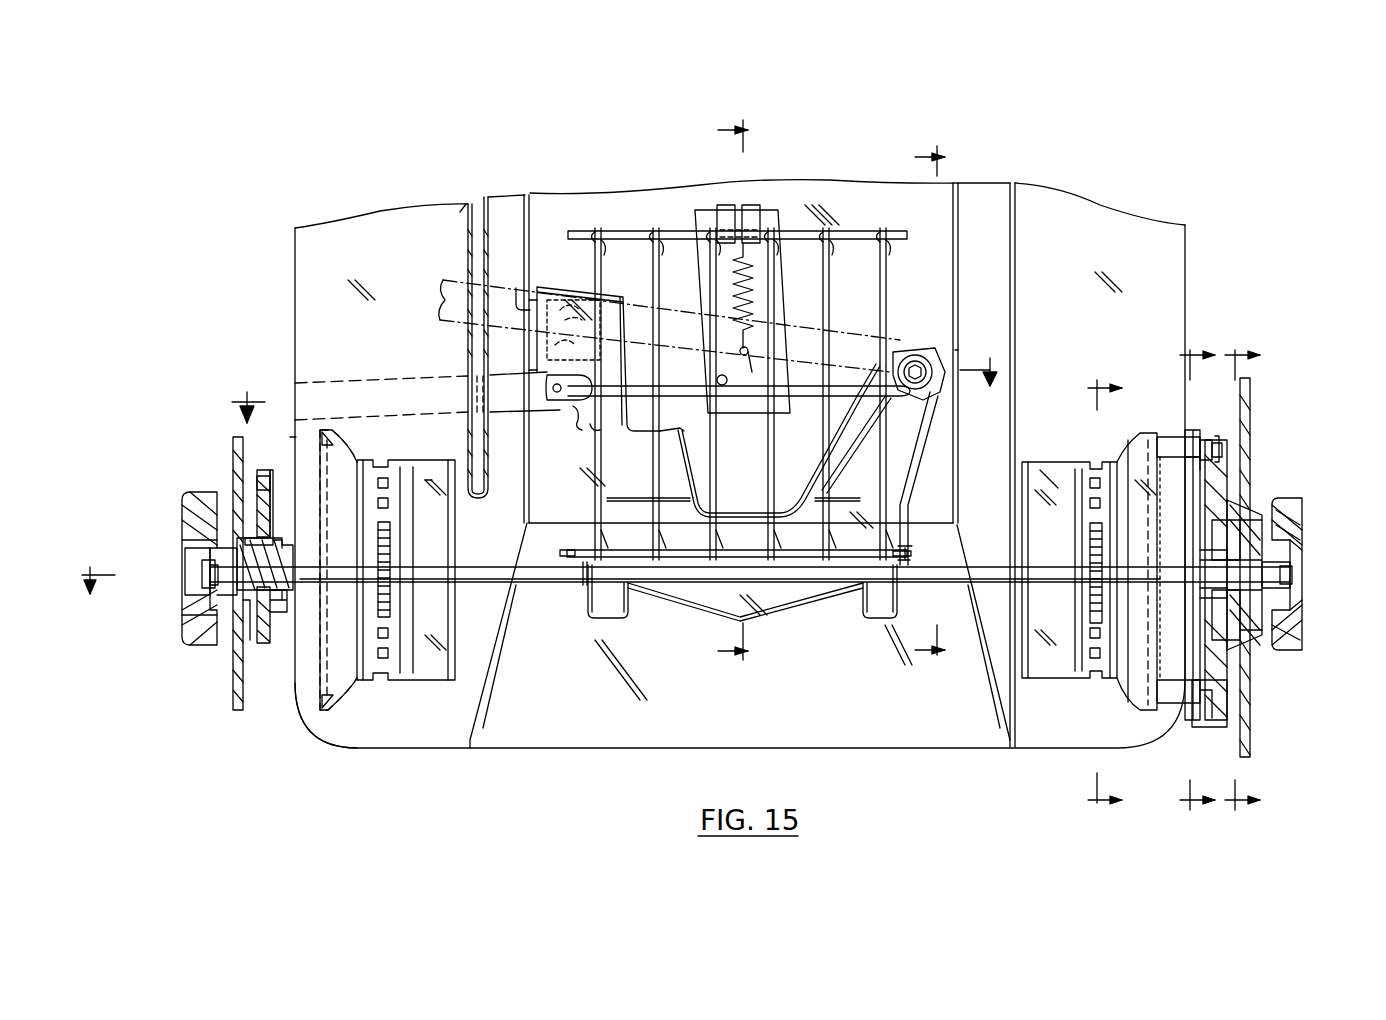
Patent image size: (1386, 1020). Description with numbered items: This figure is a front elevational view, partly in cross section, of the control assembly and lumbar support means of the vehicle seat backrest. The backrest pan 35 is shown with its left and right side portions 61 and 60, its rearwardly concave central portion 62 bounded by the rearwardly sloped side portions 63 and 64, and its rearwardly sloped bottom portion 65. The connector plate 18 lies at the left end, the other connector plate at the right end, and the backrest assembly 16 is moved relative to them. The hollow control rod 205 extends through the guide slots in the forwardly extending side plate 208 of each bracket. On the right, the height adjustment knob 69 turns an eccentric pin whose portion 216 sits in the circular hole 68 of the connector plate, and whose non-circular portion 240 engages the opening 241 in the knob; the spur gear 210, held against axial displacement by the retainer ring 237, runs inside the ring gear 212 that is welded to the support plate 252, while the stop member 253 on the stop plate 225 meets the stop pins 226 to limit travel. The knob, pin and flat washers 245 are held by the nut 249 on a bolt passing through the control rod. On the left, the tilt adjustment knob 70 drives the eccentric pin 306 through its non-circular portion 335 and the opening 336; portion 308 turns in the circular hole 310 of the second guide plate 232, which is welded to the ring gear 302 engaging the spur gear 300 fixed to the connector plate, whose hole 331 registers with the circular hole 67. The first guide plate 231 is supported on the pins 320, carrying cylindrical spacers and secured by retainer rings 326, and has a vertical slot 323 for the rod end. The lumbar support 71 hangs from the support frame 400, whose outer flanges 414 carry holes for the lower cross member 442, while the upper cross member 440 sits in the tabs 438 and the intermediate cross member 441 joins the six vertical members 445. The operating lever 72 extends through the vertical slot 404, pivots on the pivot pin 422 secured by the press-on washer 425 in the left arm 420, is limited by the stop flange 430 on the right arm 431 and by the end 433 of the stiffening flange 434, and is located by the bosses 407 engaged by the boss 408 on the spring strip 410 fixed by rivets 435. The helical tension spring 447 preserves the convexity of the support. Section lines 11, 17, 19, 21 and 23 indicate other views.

The section line 11 is at (97, 593).
The backrest assembly 16 is at (1105, 595).
The section line 17 is at (1199, 580).
The connector plate 18 is at (1252, 400).
The section line 19 is at (1244, 576).
The section line 21 is at (730, 397).
The section line 23 is at (609, 391).
The backrest pan 35 is at (1186, 240).
The right side portion 60 is at (1112, 252).
The left side portion 61 is at (382, 262).
The central portion 62 is at (890, 208).
The side portion 63 is at (1016, 232).
The side portion 64 is at (494, 213).
The bottom portion 65 is at (746, 710).
The circular hole 67 is at (1241, 525).
The circular hole 68 is at (232, 548).
The height adjustment knob 69 is at (183, 502).
The tilt adjustment knob 70 is at (1299, 505).
The lumbar support 71 is at (893, 318).
The operating lever 72 is at (293, 382).
The control rod 205 is at (979, 560).
The side plate 208 is at (322, 670).
The spur gear 210 is at (258, 645).
The ring gear 212 is at (258, 492).
The eccentric cylindrical portion 216 is at (244, 643).
The stop plate 225 is at (269, 470).
The stop pin 226 is at (256, 477).
The first guide plate 231 is at (1205, 726).
The second guide plate 232 is at (1228, 714).
The retainer ring 237 is at (300, 567).
The non-circular portion 240 is at (238, 598).
The opening 241 is at (183, 545).
The flat washer 245 is at (205, 585).
The nut 249 is at (1294, 566).
The support plate 252 is at (261, 655).
The stop member 253 is at (297, 432).
The spur gear 300 is at (1246, 632).
The ring gear 302 is at (1233, 500).
The eccentric pin 306 is at (1288, 598).
The eccentric cylindrical portion 308 is at (1224, 560).
The circular hole 310 is at (1220, 590).
The pin 320 is at (1190, 715).
The vertical slot 323 is at (1198, 467).
The retainer ring 326 is at (1214, 447).
The hole 331 is at (1292, 622).
The non-circular portion 335 is at (1292, 542).
The opening 336 is at (1292, 520).
The support frame 400 is at (932, 428).
The vertical slot 404 is at (468, 208).
The boss 407 is at (578, 420).
The boss 408 is at (551, 386).
The strip 410 is at (525, 342).
The outer flange 414 is at (580, 583).
The left arm 420 is at (914, 452).
The pivot pin 422 is at (932, 368).
The press-on washer 425 is at (926, 350).
The stop flange 430 is at (558, 292).
The right arm 431 is at (516, 288).
The end 433 is at (661, 432).
The stiffening flange 434 is at (738, 516).
The rivet 435 is at (728, 387).
The tab 438 is at (752, 208).
The upper cross member 440 is at (600, 232).
The intermediate cross member 441 is at (803, 397).
The lower cross member 442 is at (905, 553).
The vertical member 445 is at (882, 316).
The helical tension spring 447 is at (752, 300).